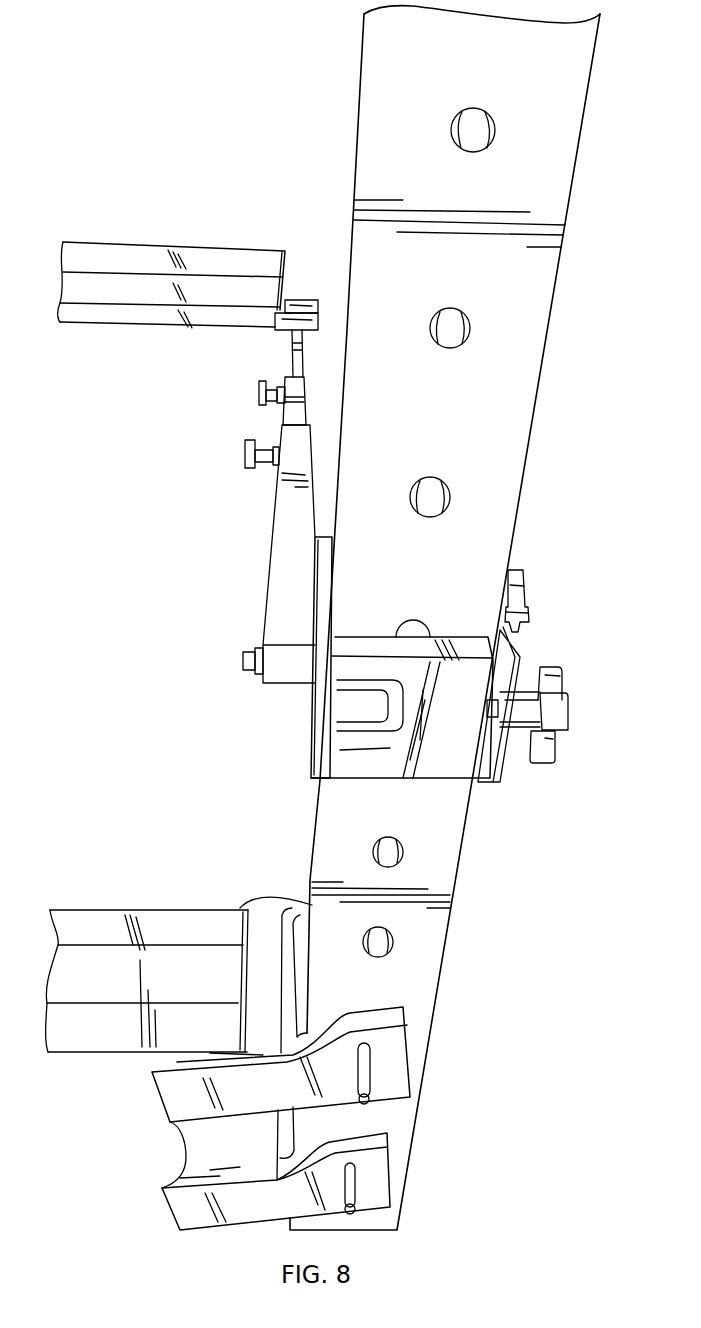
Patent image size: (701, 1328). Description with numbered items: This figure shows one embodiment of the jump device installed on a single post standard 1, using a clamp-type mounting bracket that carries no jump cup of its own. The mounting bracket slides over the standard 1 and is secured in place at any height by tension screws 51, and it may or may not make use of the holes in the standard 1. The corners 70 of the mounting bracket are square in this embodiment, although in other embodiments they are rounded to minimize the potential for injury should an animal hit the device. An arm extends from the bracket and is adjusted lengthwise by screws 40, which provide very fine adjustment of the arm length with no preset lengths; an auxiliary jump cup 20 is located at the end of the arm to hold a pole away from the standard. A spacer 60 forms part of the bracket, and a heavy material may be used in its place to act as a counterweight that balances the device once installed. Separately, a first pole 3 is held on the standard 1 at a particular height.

The standard 1 is at (523, 395).
The auxiliary jump cup 20 is at (307, 300).
The screws 40 is at (245, 457).
The corners 70 is at (322, 727).
The spacer 60 is at (453, 765).
The tension screws 51 is at (560, 700).
The first pole 3 is at (73, 917).